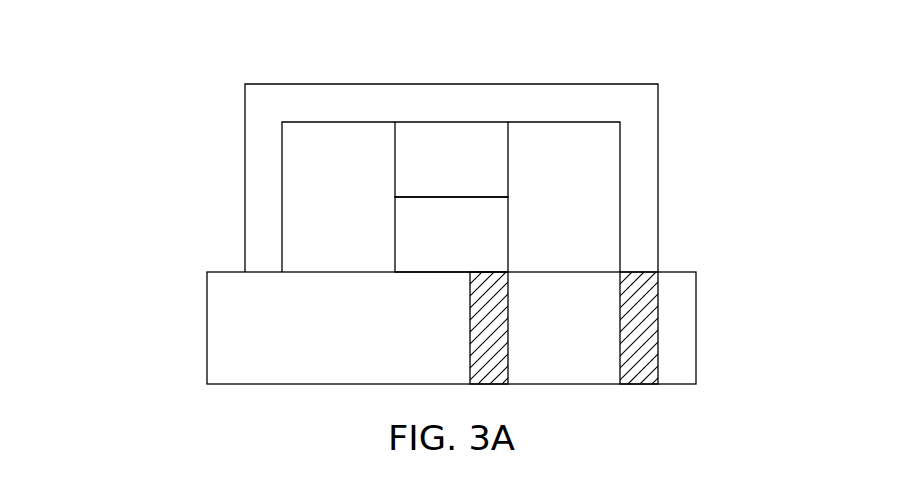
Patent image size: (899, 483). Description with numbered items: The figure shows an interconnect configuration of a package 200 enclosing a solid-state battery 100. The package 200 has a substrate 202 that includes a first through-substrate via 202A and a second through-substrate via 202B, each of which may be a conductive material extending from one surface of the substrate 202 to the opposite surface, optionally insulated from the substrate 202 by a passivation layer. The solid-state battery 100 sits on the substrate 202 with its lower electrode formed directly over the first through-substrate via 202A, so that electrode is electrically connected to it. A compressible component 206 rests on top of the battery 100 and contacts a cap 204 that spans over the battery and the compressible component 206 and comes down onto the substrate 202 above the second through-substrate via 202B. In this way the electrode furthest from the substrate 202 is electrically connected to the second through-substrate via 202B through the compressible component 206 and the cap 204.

The package 200 is at (168, 142).
The cap 204 is at (617, 99).
The compressible component 206 is at (451, 159).
The solid-state battery 100 is at (451, 234).
The substrate 202 is at (451, 328).
The first through-substrate via 202A is at (508, 327).
The second through-substrate via 202B is at (640, 327).